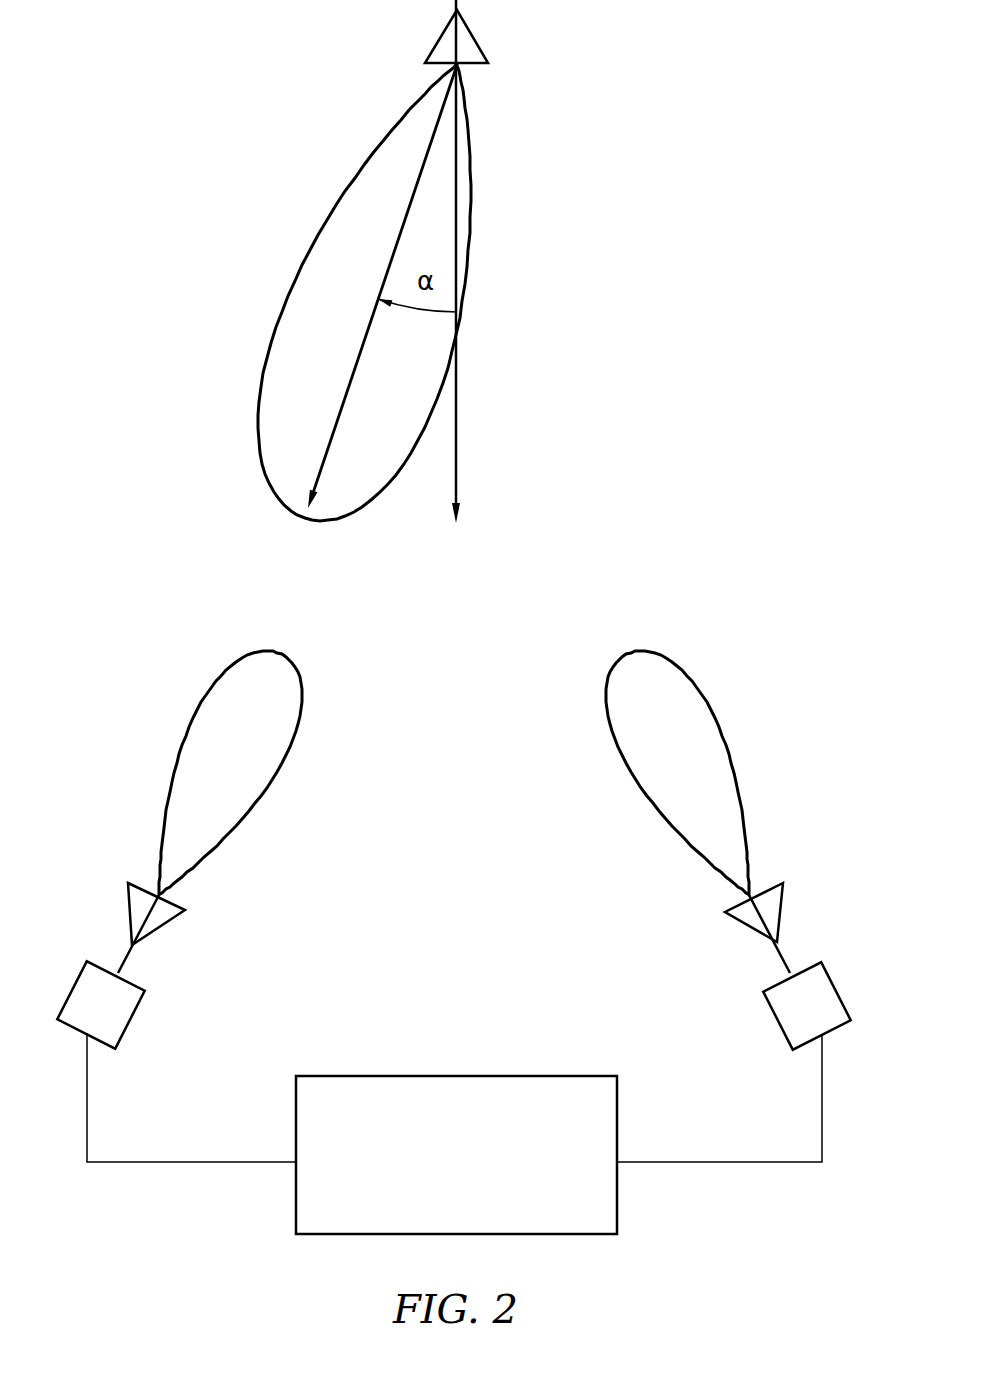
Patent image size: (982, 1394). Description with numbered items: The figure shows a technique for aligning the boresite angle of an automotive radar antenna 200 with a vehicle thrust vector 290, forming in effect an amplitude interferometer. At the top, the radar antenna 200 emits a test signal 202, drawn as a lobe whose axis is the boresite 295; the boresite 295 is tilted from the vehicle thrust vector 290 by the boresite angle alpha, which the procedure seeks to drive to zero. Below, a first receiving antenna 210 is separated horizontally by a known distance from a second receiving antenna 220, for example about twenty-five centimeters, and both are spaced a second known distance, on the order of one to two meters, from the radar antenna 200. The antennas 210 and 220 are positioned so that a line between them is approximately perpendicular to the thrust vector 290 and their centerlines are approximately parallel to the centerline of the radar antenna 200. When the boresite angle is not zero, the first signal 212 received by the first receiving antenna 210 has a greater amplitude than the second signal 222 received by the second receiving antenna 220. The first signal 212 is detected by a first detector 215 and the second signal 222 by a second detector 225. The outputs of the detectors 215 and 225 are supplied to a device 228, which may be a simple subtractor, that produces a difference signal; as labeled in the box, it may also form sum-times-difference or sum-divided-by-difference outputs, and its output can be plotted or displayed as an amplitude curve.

The automotive radar antenna 200 is at (475, 35).
The test signal 202 is at (280, 328).
The vehicle thrust vector 290 is at (458, 440).
The boresite 295 is at (419, 168).
The first receiving antenna 210 is at (172, 920).
The first signal 212 is at (300, 710).
The first detector 215 is at (130, 1032).
The second receiving antenna 220 is at (740, 918).
The second signal 222 is at (611, 725).
The second detector 225 is at (775, 1015).
The device for providing a difference signal 228 is at (617, 1213).